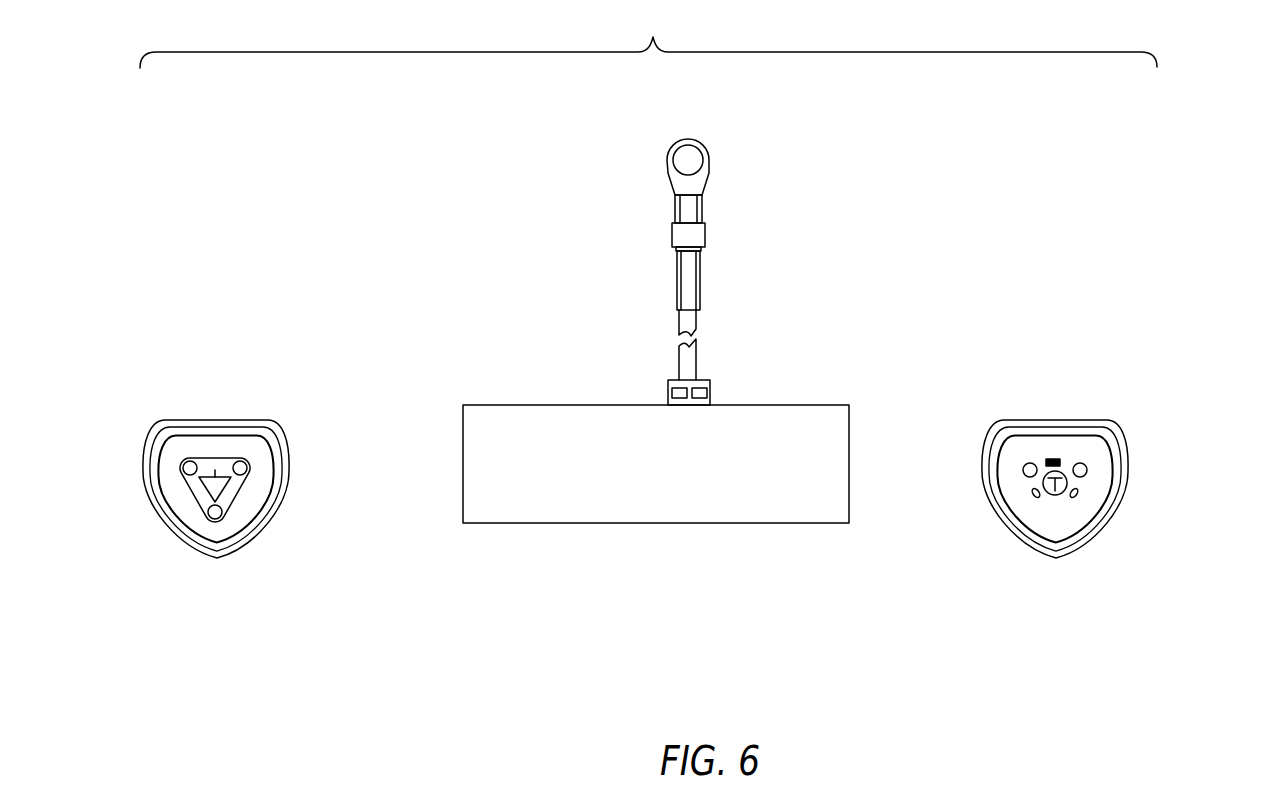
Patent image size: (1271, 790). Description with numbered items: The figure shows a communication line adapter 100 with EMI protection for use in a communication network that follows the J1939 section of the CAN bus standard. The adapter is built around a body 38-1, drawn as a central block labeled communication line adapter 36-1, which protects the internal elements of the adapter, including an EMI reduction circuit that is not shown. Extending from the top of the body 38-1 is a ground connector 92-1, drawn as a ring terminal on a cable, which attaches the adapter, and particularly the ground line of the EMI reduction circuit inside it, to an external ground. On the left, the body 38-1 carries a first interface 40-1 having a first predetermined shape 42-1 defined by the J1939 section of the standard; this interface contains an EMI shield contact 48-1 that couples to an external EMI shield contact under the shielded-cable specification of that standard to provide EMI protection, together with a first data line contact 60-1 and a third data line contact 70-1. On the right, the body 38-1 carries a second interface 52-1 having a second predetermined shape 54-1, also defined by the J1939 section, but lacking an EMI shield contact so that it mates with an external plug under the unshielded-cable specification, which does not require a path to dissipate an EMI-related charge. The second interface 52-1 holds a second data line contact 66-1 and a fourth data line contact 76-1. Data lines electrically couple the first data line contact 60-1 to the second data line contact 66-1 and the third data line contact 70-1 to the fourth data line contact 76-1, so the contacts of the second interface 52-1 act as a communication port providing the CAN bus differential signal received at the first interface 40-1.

The communication line adapter 100 is at (648, 40).
The ground connector 92-1 is at (708, 152).
The body 38-1 is at (656, 438).
The communication line adapter 36-1 is at (673, 488).
The first interface 40-1 is at (257, 494).
The first predetermined shape 42-1 is at (290, 478).
The first data line contact 60-1 is at (188, 469).
The third data line contact 70-1 is at (242, 469).
The EMI shield contact 48-1 is at (214, 513).
The second interface 52-1 is at (1058, 474).
The second predetermined shape 54-1 is at (1127, 473).
The fourth data line contact 76-1 is at (1027, 468).
The second data line contact 66-1 is at (1085, 469).